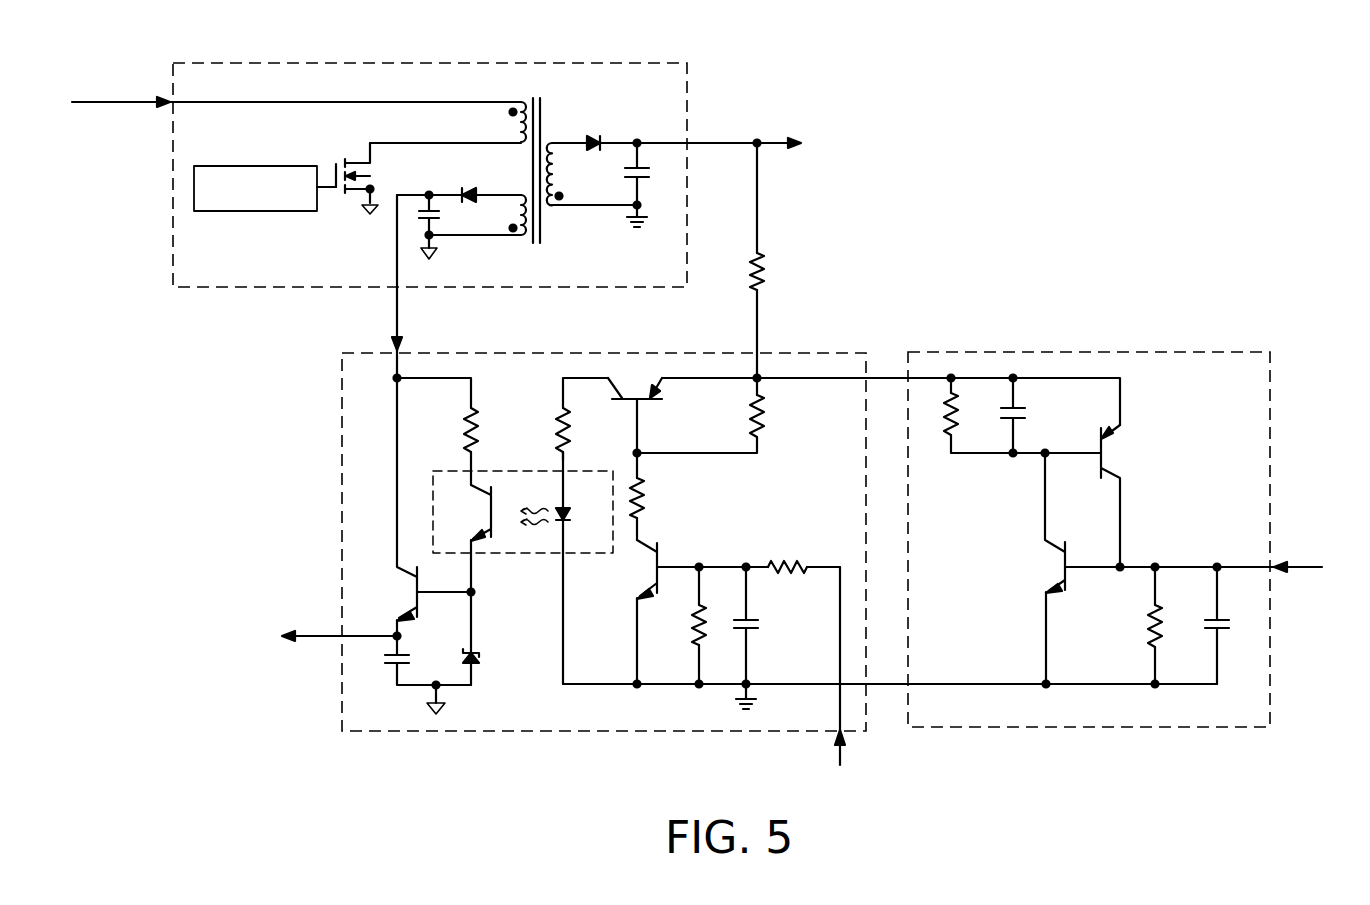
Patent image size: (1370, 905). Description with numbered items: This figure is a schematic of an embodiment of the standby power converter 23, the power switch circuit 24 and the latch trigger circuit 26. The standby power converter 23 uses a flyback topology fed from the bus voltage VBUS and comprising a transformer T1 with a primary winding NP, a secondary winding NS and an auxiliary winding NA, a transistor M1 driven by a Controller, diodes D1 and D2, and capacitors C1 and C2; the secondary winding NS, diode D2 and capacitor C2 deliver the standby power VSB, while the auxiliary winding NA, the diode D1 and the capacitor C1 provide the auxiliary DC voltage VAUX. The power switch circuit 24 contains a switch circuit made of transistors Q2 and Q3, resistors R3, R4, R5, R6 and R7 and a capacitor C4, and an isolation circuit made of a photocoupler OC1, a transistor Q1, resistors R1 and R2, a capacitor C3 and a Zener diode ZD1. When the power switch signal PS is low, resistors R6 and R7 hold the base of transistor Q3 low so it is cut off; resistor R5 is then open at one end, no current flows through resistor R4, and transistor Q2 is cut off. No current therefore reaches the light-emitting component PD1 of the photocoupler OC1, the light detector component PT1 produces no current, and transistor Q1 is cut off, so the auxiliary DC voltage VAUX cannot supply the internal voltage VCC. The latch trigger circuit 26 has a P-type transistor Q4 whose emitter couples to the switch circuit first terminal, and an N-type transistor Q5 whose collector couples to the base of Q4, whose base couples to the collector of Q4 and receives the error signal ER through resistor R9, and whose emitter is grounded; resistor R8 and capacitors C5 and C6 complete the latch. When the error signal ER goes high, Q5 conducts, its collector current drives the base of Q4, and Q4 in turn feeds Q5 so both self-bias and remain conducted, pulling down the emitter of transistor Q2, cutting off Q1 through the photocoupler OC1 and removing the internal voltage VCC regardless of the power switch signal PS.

The standby power converter 23 is at (450, 60).
The power switch circuit 24 is at (606, 733).
The latch trigger circuit 26 is at (1106, 729).
The bus voltage input VBUS is at (294, 91).
The controller Controller is at (265, 188).
The transistor M1 is at (372, 178).
The transformer T1 is at (503, 159).
The primary winding NP is at (448, 122).
The auxiliary winding NA is at (477, 215).
The secondary winding NS is at (592, 174).
The diode D1 is at (459, 181).
The diode D2 is at (610, 131).
The capacitor C1 is at (442, 226).
The capacitor C2 is at (650, 184).
The standby power VSB is at (719, 131).
The auxiliary DC voltage VAUX is at (424, 286).
The resistor R1 is at (436, 430).
The resistor R2 is at (582, 419).
The resistor R3 is at (769, 260).
The resistor R4 is at (714, 415).
The resistor R5 is at (650, 496).
The resistor R6 is at (685, 626).
The resistor R7 is at (804, 554).
The resistor R8 is at (1022, 414).
The resistor R9 is at (1168, 626).
The capacitor C3 is at (428, 675).
The capacitor C4 is at (759, 637).
The capacitor C5 is at (1026, 416).
The capacitor C6 is at (1230, 624).
The transistor Q1 is at (420, 507).
The transistor Q2 is at (737, 407).
The transistor Q3 is at (690, 614).
The P-type transistor Q4 is at (1095, 496).
The N-type transistor Q5 is at (1067, 570).
The photocoupler OC1 is at (520, 556).
The light detector component PT1 is at (465, 538).
The light-emitting component PD1 is at (583, 568).
The Zener diode ZD1 is at (491, 638).
The internal power VCC is at (333, 624).
The power switch signal PS is at (838, 680).
The error signal ER is at (1233, 567).